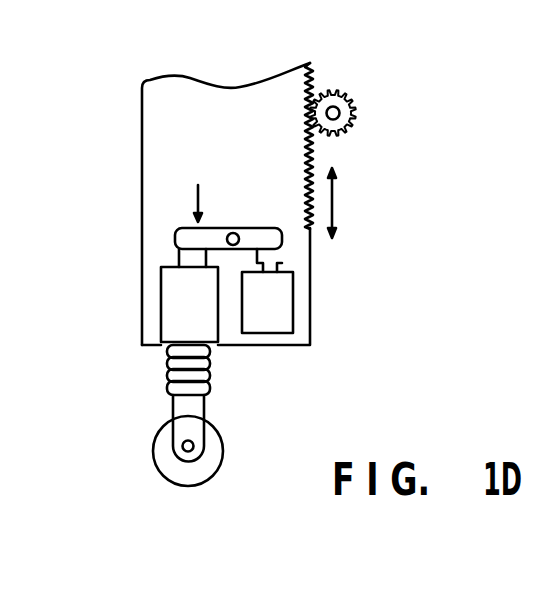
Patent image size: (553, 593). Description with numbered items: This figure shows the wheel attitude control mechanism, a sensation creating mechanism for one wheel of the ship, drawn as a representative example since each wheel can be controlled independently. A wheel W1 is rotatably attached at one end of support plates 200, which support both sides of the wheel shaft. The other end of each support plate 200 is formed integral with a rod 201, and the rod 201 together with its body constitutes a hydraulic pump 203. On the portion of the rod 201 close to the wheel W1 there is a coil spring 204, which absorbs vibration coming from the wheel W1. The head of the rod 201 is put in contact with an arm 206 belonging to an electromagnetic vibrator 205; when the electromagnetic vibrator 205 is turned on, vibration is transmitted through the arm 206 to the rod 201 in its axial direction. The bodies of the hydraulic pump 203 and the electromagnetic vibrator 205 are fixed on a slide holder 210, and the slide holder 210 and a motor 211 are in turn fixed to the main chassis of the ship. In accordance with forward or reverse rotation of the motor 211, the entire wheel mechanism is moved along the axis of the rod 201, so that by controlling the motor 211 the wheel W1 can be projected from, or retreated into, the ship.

The support plate 200 is at (193, 410).
The rod 201 is at (175, 256).
The hydraulic pump 203 is at (160, 307).
The coil spring 204 is at (208, 368).
The electromagnetic vibrator 205 is at (285, 305).
The arm 206 is at (233, 232).
The slide holder 210 is at (312, 73).
The motor 211 is at (357, 113).
The wheel W1 is at (162, 455).